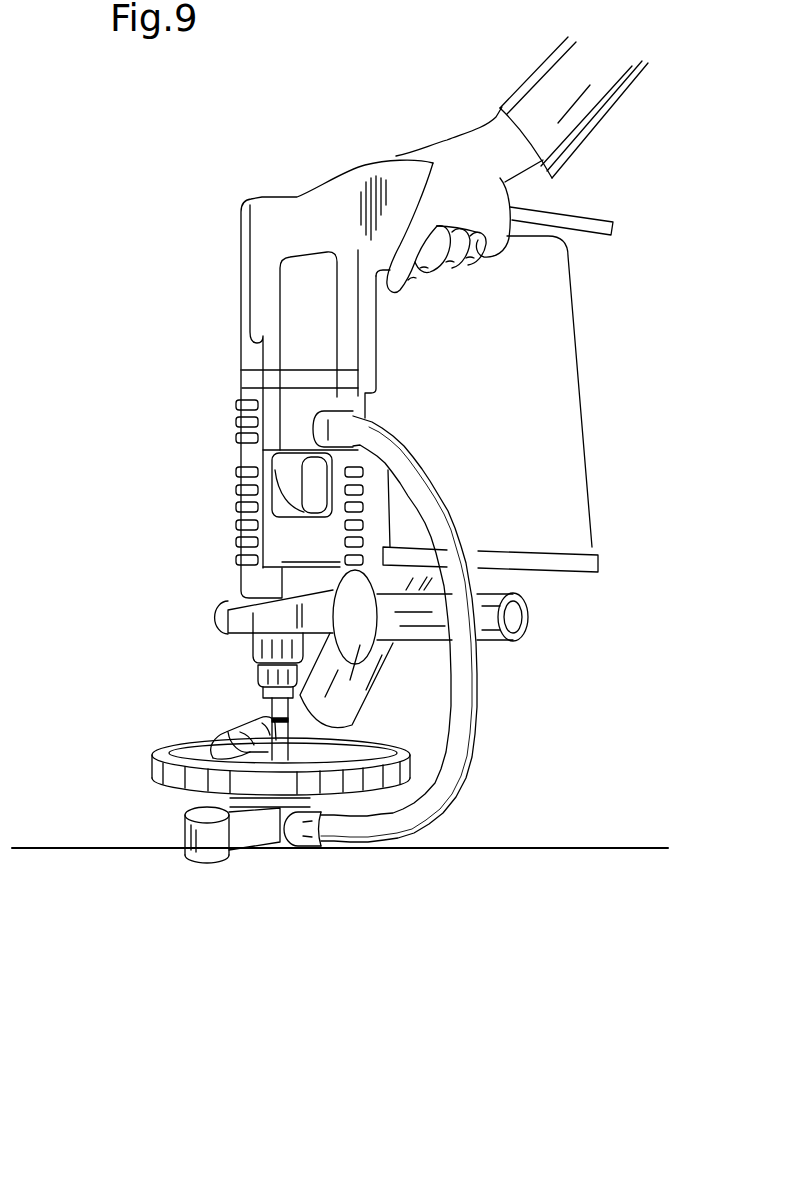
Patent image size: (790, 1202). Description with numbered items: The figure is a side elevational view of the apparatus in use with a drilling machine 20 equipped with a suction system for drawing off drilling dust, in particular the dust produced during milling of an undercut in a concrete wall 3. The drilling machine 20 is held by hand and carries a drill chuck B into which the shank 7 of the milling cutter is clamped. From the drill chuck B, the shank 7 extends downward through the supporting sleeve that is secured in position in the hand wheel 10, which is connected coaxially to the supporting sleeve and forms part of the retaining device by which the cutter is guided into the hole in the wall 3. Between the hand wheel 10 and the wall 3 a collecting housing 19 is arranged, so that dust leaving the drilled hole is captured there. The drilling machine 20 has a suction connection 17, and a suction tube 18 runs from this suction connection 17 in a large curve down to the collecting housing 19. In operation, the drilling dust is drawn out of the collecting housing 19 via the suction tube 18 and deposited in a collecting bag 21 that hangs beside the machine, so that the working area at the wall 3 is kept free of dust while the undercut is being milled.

The concrete wall 3 is at (80, 930).
The shank of the milling cutter 7 is at (270, 708).
The hand wheel 10 is at (152, 782).
The suction connection 17 is at (323, 417).
The suction tube 18 is at (425, 505).
The collecting housing 19 is at (284, 850).
The drilling machine 20 is at (240, 503).
The collecting bag 21 is at (560, 463).
The drill chuck B is at (257, 673).